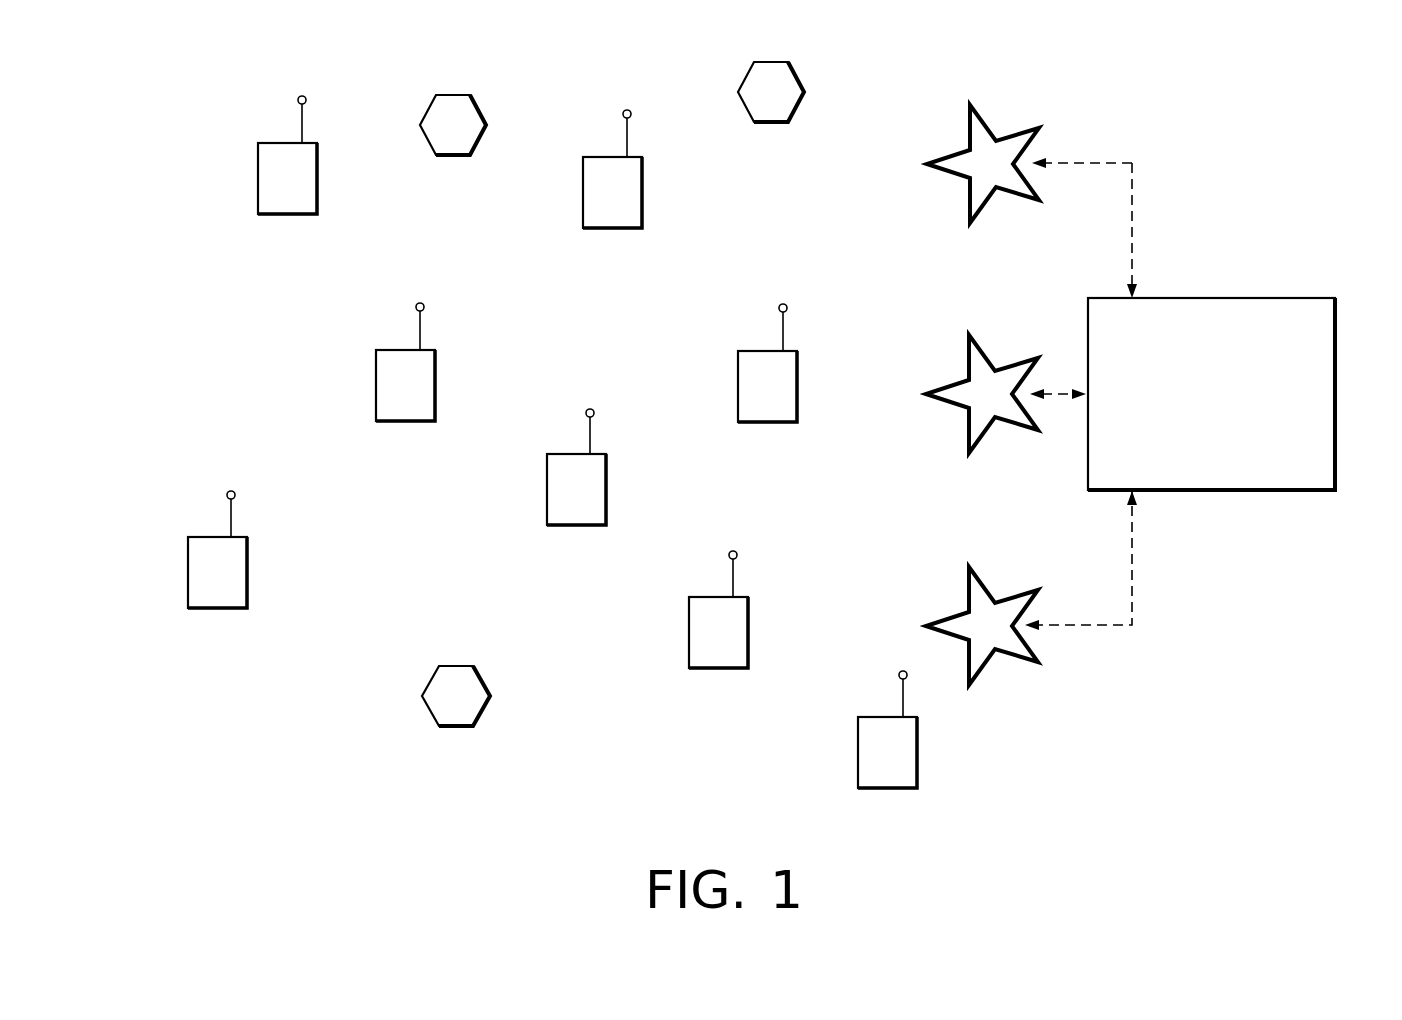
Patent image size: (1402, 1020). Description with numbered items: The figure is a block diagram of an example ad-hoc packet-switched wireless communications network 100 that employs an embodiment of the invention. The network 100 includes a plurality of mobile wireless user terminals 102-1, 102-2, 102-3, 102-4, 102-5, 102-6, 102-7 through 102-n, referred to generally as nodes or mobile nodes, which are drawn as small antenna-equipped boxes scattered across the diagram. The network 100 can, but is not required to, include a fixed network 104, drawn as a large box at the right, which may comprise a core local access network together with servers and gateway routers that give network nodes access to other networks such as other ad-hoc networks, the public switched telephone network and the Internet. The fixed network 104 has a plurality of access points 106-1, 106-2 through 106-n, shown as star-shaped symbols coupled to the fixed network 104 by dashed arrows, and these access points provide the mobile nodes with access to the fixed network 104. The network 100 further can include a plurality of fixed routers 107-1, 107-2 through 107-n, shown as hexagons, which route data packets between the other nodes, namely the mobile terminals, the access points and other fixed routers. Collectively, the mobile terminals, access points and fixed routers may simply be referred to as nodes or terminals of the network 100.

The ad-hoc packet-switched wireless communications network 100 is at (1182, 93).
The mobile wireless user terminal 102-1 is at (290, 216).
The mobile wireless user terminal 102-2 is at (608, 230).
The mobile wireless user terminal 102-3 is at (400, 423).
The mobile wireless user terminal 102-4 is at (208, 610).
The mobile wireless user terminal 102-5 is at (568, 527).
The mobile wireless user terminal 102-6 is at (760, 424).
The mobile wireless user terminal 102-7 is at (708, 670).
The mobile wireless user terminal 102-n is at (876, 790).
The fixed network 104 is at (1253, 493).
The access point 106-1 is at (997, 195).
The access point 106-2 is at (995, 425).
The access point 106-n is at (995, 657).
The fixed router 107-1 is at (449, 157).
The fixed router 107-2 is at (773, 124).
The fixed router 107-n is at (452, 728).